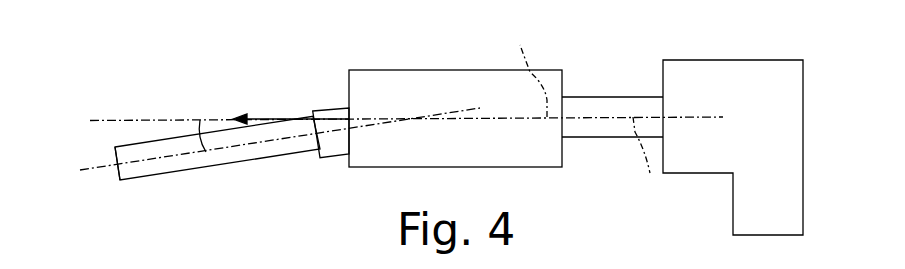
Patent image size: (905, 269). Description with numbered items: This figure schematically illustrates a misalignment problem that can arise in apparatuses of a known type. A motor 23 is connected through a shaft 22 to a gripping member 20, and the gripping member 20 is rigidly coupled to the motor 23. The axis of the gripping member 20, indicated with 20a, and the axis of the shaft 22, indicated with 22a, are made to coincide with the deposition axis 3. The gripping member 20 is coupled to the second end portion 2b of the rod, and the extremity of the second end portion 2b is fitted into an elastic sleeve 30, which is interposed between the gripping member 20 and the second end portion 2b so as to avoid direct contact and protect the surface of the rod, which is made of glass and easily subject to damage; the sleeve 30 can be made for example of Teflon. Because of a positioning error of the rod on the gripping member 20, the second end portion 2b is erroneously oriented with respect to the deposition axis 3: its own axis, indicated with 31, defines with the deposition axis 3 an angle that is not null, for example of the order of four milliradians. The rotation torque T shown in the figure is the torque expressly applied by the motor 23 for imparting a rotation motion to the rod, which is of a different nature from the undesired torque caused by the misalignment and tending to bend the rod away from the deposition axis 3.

The deposition axis 3 is at (122, 120).
The second end portion 2b is at (205, 163).
The axis of second end portion 31 is at (147, 167).
The rotation torque T is at (273, 120).
The elastic sleeve 30 is at (333, 122).
The gripping member 20 is at (457, 78).
The axis of gripping member 20a is at (526, 67).
The shaft 22 is at (613, 105).
The axis of shaft 22a is at (647, 163).
The motor 23 is at (702, 75).